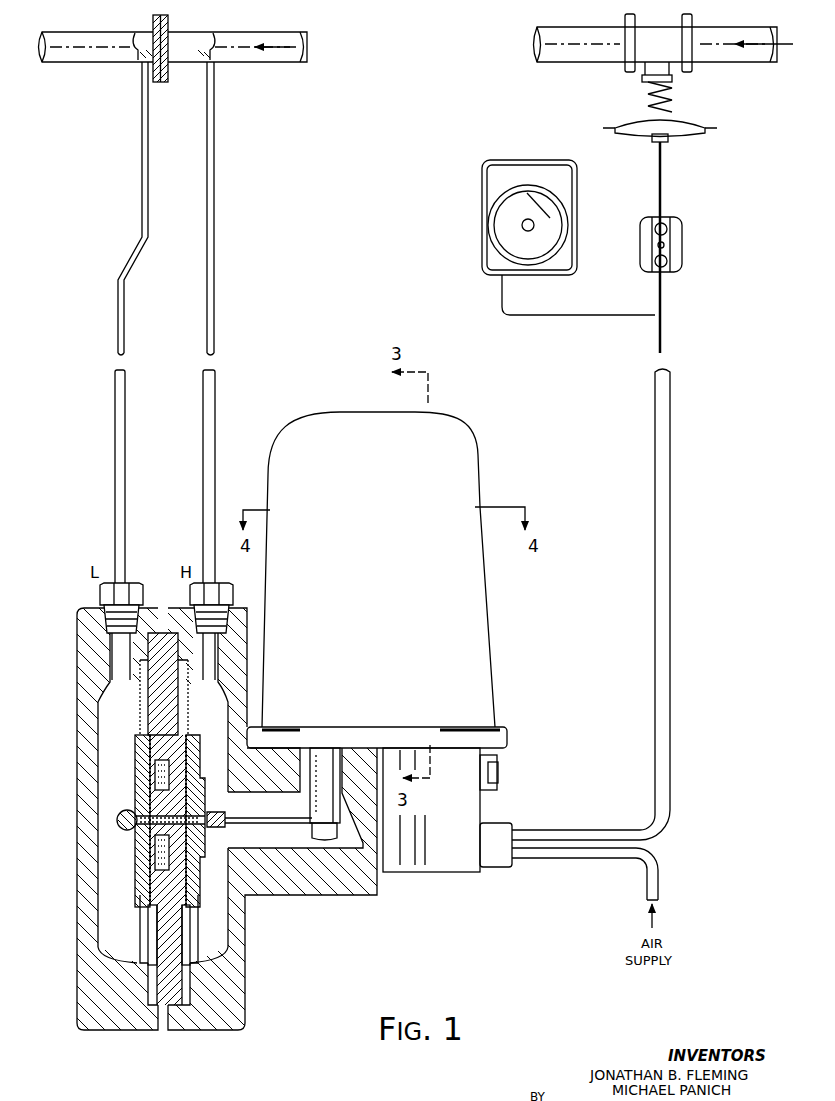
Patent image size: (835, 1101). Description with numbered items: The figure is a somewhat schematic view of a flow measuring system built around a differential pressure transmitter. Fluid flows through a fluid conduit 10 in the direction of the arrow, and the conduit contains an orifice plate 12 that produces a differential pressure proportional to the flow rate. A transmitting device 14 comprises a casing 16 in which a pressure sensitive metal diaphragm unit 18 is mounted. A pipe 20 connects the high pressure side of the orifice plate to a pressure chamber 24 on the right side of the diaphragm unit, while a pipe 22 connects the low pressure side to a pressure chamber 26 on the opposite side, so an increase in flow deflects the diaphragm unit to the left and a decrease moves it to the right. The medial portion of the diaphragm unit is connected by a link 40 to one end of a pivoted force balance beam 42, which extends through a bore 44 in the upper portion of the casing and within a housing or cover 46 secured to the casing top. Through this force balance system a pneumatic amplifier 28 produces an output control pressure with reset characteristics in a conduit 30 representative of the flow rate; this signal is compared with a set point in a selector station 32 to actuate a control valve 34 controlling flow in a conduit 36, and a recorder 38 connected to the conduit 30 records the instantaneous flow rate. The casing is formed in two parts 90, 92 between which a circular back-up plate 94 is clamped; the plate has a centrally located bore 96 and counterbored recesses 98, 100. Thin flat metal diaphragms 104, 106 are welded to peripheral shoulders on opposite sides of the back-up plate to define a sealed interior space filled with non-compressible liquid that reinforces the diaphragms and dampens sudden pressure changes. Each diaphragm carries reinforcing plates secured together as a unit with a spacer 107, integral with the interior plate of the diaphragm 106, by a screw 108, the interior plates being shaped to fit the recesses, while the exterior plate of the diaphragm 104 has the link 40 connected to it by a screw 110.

The fluid conduit 10 is at (273, 66).
The orifice plate 12 is at (170, 62).
The transmitting device 14 is at (472, 420).
The casing 16 is at (308, 895).
The pressure sensitive metal diaphragm unit 18 is at (137, 819).
The pipe 20 is at (216, 392).
The pipe 22 is at (114, 410).
The pressure chamber 24 is at (218, 728).
The pressure chamber 26 is at (128, 731).
The pneumatic amplifier 28 is at (462, 872).
The conduit 30 is at (671, 458).
The selector station 32 is at (683, 244).
The control valve 34 is at (674, 80).
The conduit 36 is at (562, 62).
The recorder 38 is at (482, 210).
The link 40 is at (258, 824).
The force balance beam 42 is at (310, 798).
The bore 44 is at (300, 788).
The housing or cover 46 is at (478, 448).
The casing part 90 is at (247, 1003).
The casing part 92 is at (103, 1033).
The circular back-up plate 94 is at (177, 1033).
The bore 96 is at (158, 858).
The counterbored recess 98 is at (188, 893).
The counterbored recess 100 is at (157, 893).
The diaphragm 104 is at (183, 920).
The diaphragm 106 is at (150, 922).
The spacer 107 is at (160, 785).
The screw 108 is at (121, 811).
The screw 110 is at (232, 807).